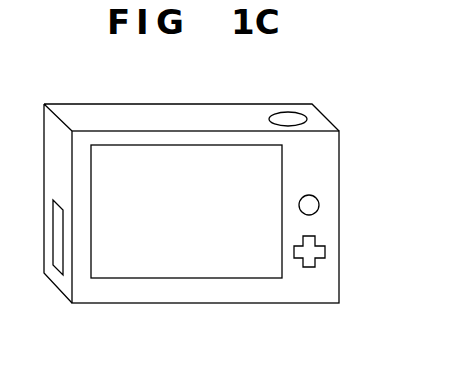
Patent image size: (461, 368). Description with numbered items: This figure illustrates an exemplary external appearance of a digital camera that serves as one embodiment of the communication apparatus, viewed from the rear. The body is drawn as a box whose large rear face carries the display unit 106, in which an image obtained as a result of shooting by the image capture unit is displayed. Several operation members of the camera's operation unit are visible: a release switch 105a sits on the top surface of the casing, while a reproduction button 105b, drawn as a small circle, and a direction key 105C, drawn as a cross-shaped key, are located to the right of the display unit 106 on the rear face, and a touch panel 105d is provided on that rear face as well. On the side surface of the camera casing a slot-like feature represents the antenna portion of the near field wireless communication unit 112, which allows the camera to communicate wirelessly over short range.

The release switch 105a is at (288, 117).
The reproduction button 105b is at (319, 203).
The direction key 105C is at (318, 239).
The touch panel 105d is at (122, 144).
The display unit 106 is at (230, 157).
The near field wireless communication unit 112 is at (54, 217).